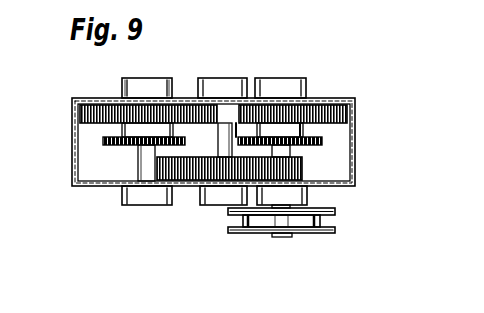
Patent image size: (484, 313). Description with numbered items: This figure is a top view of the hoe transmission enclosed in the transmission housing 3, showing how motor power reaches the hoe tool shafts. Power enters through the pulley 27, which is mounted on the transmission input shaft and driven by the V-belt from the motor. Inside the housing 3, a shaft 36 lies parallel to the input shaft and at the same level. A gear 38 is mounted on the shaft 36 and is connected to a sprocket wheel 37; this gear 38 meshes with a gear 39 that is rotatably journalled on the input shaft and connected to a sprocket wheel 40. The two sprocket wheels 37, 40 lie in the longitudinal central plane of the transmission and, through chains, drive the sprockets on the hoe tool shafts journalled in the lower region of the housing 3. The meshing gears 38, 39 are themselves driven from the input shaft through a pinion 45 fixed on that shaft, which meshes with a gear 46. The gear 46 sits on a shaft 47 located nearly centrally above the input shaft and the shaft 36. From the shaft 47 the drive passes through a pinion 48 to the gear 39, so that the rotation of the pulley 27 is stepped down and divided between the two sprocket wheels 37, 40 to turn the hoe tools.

The transmission housing 3 is at (353, 105).
The pulley 27 is at (303, 217).
The shaft 36 is at (147, 165).
The sprocket wheel 37 is at (103, 140).
The gear 38 is at (101, 109).
The gear 39 is at (321, 103).
The sprocket wheel 40 is at (322, 141).
The pinion 45 is at (289, 166).
The gear 46 is at (197, 178).
The shaft 47 is at (242, 98).
The pinion 48 is at (224, 133).